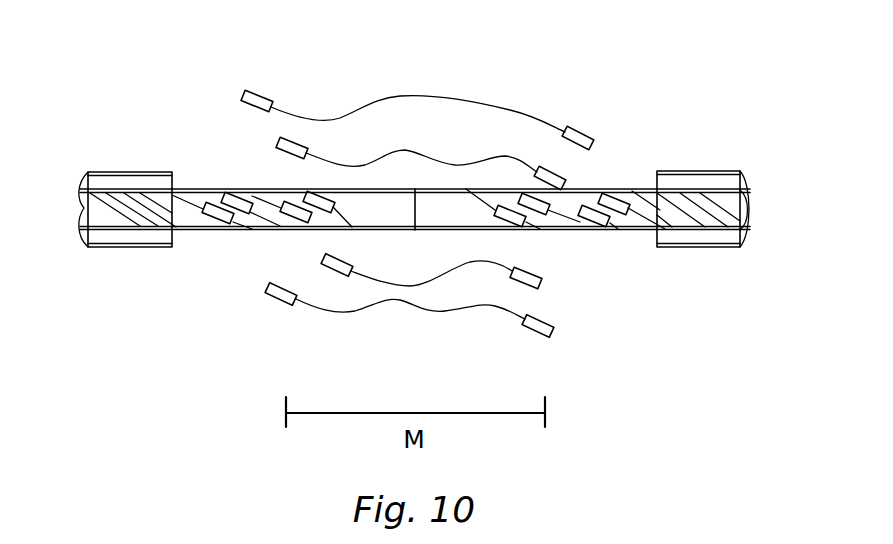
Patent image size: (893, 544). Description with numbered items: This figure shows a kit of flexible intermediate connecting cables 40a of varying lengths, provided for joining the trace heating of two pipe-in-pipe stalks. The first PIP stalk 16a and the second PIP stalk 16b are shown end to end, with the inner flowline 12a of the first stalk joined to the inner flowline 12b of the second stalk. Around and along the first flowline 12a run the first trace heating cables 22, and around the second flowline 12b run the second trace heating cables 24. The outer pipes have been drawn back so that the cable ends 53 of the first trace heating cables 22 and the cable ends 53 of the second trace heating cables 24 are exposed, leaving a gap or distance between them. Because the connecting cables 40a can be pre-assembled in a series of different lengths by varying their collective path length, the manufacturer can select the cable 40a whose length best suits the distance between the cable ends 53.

The inner flowline 12a is at (205, 229).
The inner flowline 12b is at (615, 230).
The first PIP stalk 16a is at (132, 248).
The second PIP stalk 16b is at (697, 248).
The first trace heating cable 22 is at (182, 196).
The second trace heating cable 24 is at (640, 230).
The intermediate connecting cable 40a is at (416, 152).
The cable end 53 is at (299, 220).